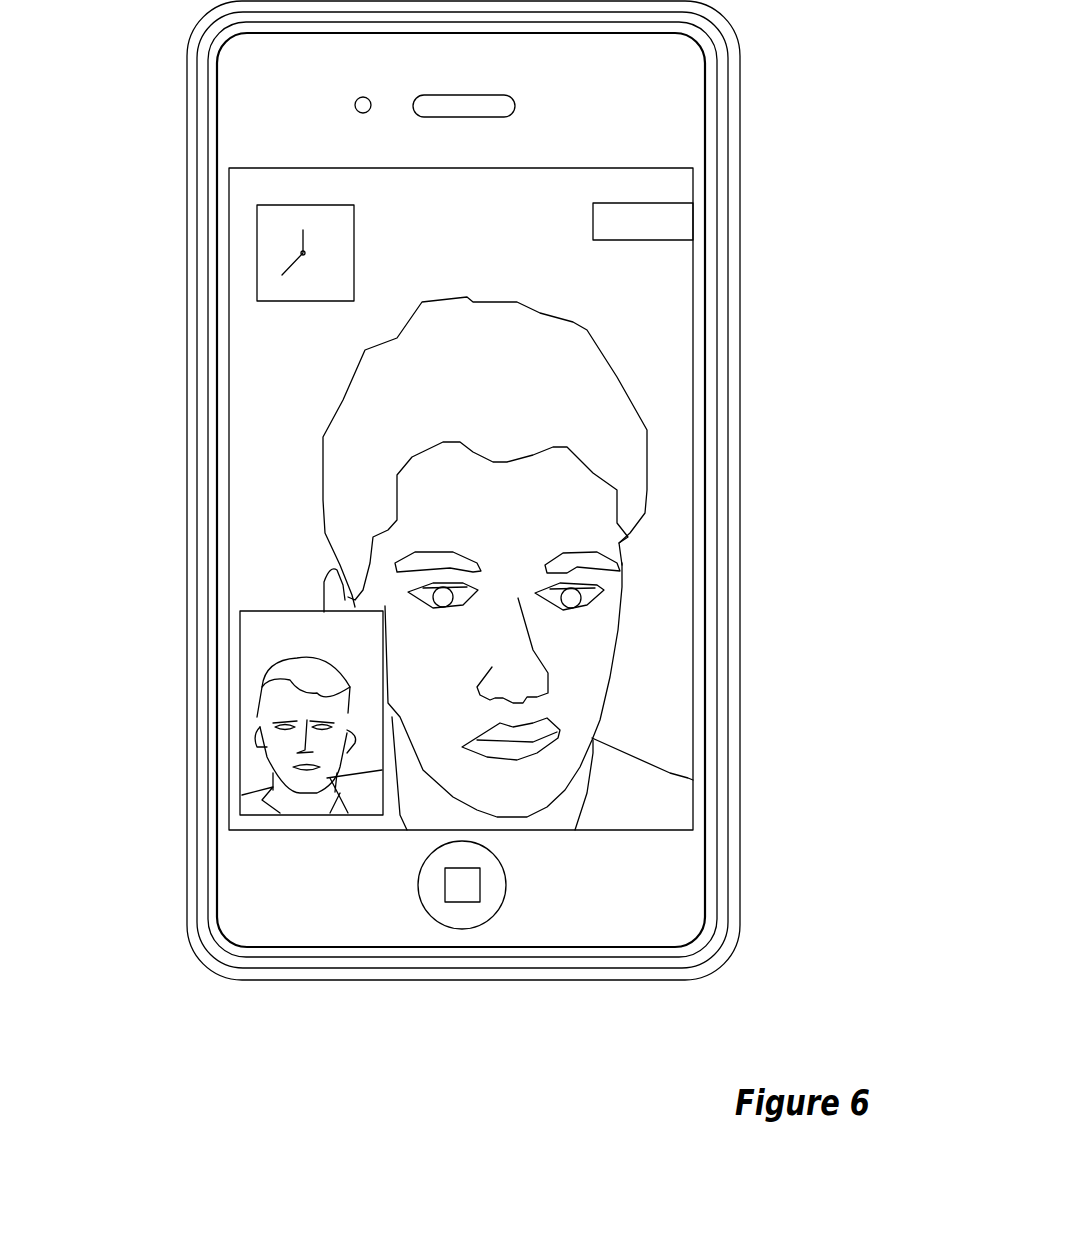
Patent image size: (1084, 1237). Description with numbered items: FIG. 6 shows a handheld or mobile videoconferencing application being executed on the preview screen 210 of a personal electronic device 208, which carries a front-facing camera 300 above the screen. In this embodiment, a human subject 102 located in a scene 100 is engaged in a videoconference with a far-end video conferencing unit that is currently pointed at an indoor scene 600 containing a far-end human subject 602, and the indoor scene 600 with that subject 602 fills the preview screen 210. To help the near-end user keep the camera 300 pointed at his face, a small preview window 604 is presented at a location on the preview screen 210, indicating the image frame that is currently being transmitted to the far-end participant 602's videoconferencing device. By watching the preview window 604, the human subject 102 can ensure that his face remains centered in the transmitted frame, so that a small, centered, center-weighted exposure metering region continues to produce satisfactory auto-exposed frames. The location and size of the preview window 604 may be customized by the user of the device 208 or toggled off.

The personal electronic device 208 is at (740, 125).
The front-facing camera 300 is at (354, 107).
The preview screen 210 is at (373, 167).
The indoor scene 600 is at (560, 240).
The human subject 602 is at (530, 303).
The preview window 604 is at (297, 611).
The scene 100 is at (262, 641).
The human subject 102 is at (270, 672).